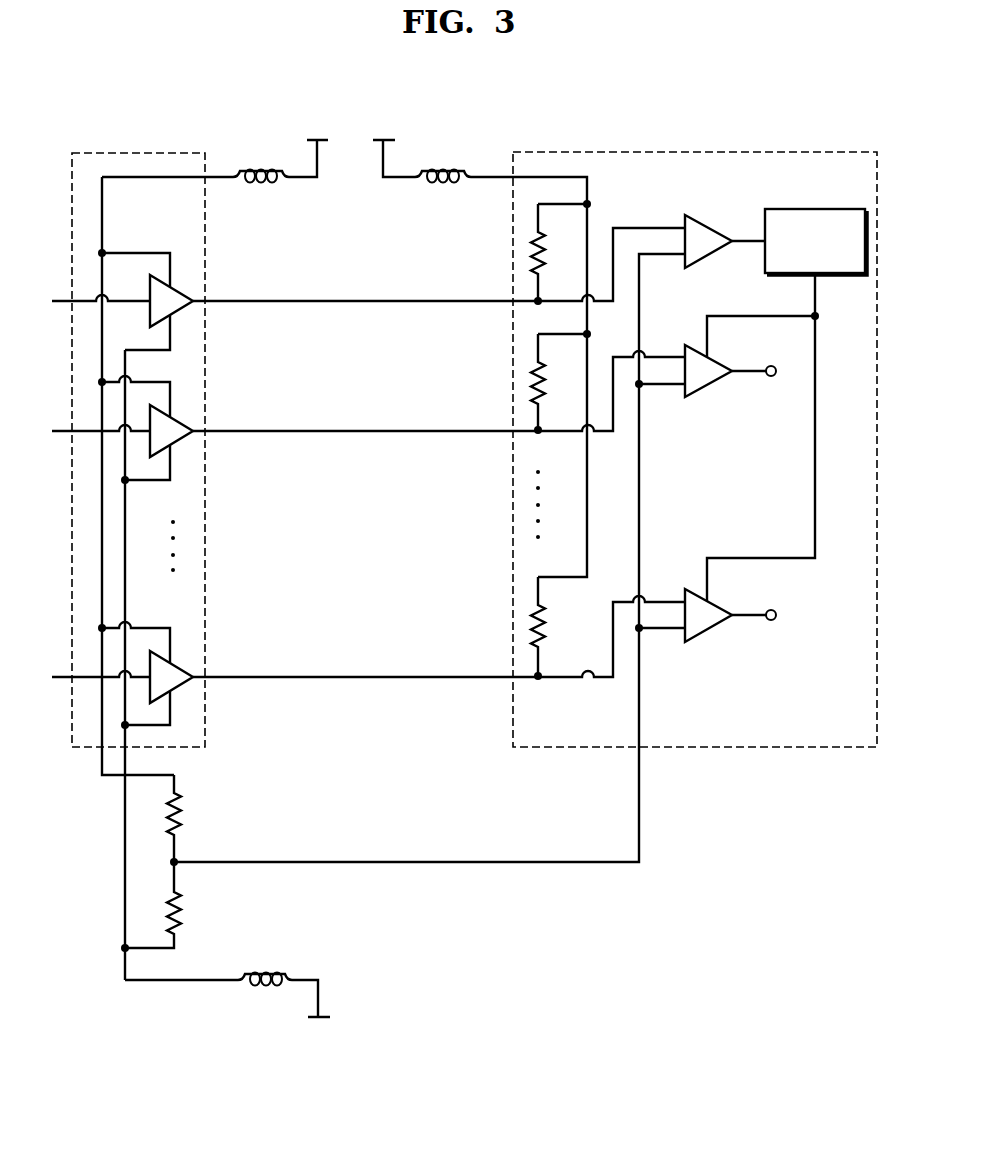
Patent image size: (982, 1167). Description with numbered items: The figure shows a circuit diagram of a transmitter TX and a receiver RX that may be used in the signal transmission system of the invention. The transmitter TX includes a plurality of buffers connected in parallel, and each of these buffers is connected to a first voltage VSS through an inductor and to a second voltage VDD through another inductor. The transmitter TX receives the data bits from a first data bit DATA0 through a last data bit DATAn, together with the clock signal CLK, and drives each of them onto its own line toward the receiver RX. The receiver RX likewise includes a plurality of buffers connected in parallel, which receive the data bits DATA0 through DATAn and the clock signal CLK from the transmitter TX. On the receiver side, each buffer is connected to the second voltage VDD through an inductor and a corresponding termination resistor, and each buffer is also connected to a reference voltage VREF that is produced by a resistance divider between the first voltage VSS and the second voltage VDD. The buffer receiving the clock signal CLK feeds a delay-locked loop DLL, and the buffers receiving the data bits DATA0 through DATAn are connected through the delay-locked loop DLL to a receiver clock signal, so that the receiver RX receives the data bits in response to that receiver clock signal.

The transmitter TX is at (128, 550).
The receiver RX is at (695, 433).
The second voltage VDD is at (346, 344).
The first voltage VSS is at (233, 1013).
The reference voltage VREF is at (403, 603).
The clock signal CLK is at (439, 254).
The data bit DATA[0] DATA0 is at (439, 384).
The data bit DATA[n-1] DATAn is at (439, 628).
The delay-locked loop DLL is at (799, 242).